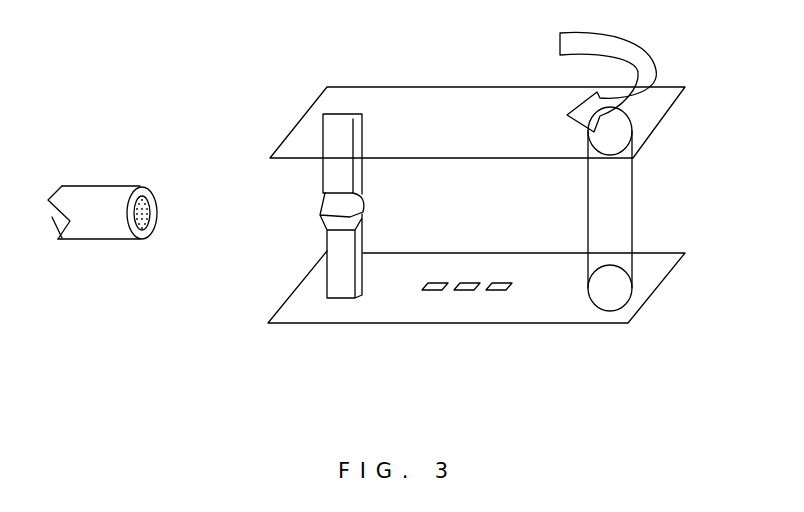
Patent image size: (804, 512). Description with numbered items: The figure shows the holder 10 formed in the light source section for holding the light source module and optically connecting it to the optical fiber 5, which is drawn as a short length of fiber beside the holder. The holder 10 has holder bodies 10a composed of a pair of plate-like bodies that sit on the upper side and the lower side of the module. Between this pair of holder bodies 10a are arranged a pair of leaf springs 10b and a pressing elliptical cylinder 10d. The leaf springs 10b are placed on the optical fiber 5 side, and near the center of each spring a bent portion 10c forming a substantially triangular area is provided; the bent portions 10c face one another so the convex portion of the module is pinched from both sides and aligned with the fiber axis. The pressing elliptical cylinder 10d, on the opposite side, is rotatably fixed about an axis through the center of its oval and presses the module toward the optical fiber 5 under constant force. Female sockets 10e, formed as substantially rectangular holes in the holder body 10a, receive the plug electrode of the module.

The optical fiber 5 is at (94, 200).
The holder 10 is at (698, 367).
The holder bodies 10a is at (470, 110).
The leaf springs 10b is at (337, 129).
The bent portions 10c is at (320, 215).
The pressing elliptical cylinder 10d is at (618, 195).
The female sockets 10e is at (432, 290).